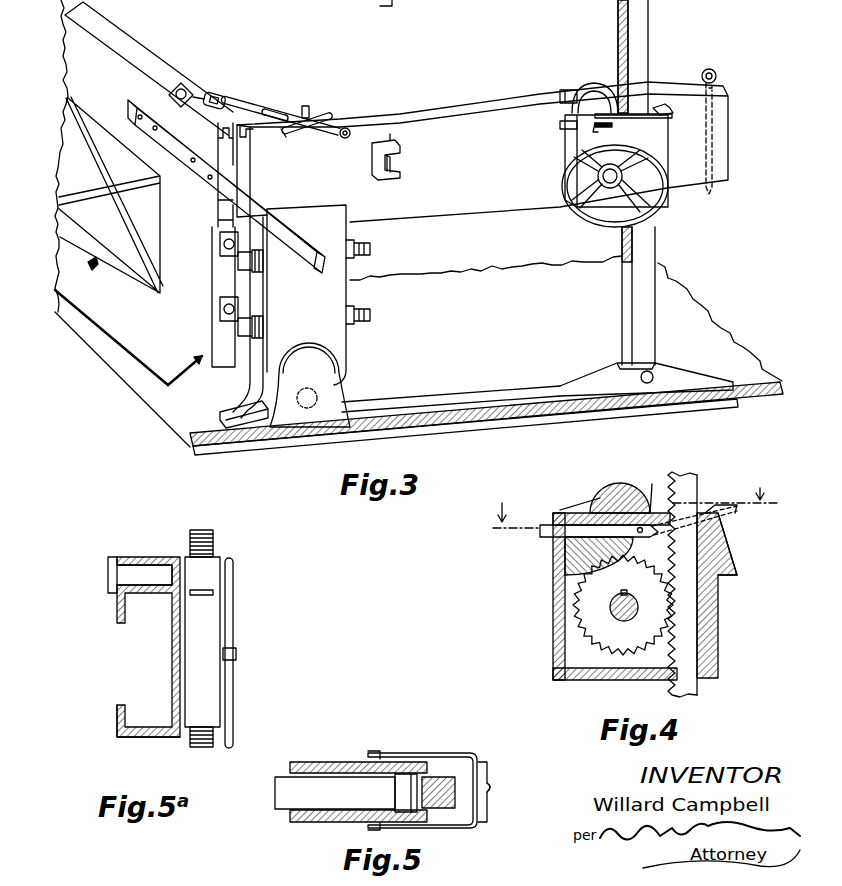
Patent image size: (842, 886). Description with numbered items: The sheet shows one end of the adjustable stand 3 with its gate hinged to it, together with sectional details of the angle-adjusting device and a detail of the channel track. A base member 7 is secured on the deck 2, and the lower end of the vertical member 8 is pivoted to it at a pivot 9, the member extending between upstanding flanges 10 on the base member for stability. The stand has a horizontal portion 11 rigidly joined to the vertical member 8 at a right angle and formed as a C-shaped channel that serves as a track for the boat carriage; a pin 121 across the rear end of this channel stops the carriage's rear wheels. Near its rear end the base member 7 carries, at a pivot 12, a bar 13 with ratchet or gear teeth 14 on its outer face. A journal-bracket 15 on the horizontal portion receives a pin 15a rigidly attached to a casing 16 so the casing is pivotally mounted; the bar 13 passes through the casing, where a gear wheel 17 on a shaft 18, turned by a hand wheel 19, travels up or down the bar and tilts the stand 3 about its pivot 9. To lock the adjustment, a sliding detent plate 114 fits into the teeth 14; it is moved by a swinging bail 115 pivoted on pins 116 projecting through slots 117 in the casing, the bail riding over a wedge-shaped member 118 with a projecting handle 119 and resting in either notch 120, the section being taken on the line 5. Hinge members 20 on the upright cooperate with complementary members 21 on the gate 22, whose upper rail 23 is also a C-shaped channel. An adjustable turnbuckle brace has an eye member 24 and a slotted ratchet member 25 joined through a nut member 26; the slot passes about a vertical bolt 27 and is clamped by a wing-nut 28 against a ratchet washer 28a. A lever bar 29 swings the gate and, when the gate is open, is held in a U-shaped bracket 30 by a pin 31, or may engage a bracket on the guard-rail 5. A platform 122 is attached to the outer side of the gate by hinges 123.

In FIG. 3, the deck 2 is at (552, 417).
In FIG. 3, the stand 3 is at (371, 279).
In FIG. 4, the guard-rail 5 is at (625, 513).
In FIG. 3, the base member 7 is at (475, 399).
In FIG. 3, the vertical member 8 is at (332, 341).
In FIG. 3, the pivot 9 is at (317, 396).
In FIG. 3, the upstanding flanges 10 is at (327, 364).
In FIG. 3, the horizontal portion 11 is at (483, 193).
In FIG. 5A, the horizontal portion 11 is at (115, 735).
In FIG. 3, the pivot 12 is at (655, 372).
In FIG. 3, the bar 13 is at (640, 275).
In FIG. 5A, the bar 13 is at (213, 547).
In FIG. 5, the bar 13 is at (443, 778).
In FIG. 4, the bar 13 is at (688, 491).
In FIG. 3, the ratchet or gear teeth 14 is at (618, 43).
In FIG. 5, the ratchet or gear teeth 14 is at (417, 790).
In FIG. 4, the ratchet or gear teeth 14 is at (672, 688).
In FIG. 3, the journal-bracket 15 is at (577, 90).
In FIG. 5A, the journal-bracket 15 is at (139, 556).
In FIG. 4, the journal-bracket 15 is at (585, 512).
In FIG. 5A, the pin 15a is at (133, 577).
In FIG. 4, the pin 15a is at (578, 490).
In FIG. 3, the casing 16 is at (575, 149).
In FIG. 5A, the casing 16 is at (205, 690).
In FIG. 5, the casing 16 is at (320, 823).
In FIG. 4, the casing 16 is at (553, 576).
In FIG. 4, the ratchet or gear wheel 17 is at (592, 605).
In FIG. 3, the shaft 18 is at (604, 177).
In FIG. 4, the shaft 18 is at (612, 612).
In FIG. 3, the hand wheel 19 is at (583, 203).
In FIG. 5A, the hand wheel 19 is at (236, 653).
In FIG. 3, the hinge members 20 is at (237, 261).
In FIG. 3, the complementary members 21 is at (219, 245).
In FIG. 3, the gate 22 is at (110, 195).
In FIG. 3, the upper rail 23 is at (128, 51).
In FIG. 3, the eye member 24 is at (196, 96).
In FIG. 3, the slotted ratchet member 25 is at (260, 104).
In FIG. 3, the nut member 26 is at (226, 98).
In FIG. 3, the vertical bolt 27 is at (308, 107).
In FIG. 3, the wing-nut 28 is at (324, 113).
In FIG. 3, the ratchet washer 28a is at (286, 137).
In FIG. 3, the lever bar 29 is at (258, 206).
In FIG. 3, the U-shaped bracket 30 is at (400, 147).
In FIG. 3, the pin 31 is at (400, 161).
In FIG. 3, the sliding detent plate 114 is at (560, 126).
In FIG. 5A, the sliding detent plate 114 is at (214, 592).
In FIG. 5, the sliding detent plate 114 is at (335, 793).
In FIG. 4, the sliding detent plate 114 is at (556, 532).
In FIG. 3, the swinging bail 115 is at (668, 117).
In FIG. 5, the swinging bail 115 is at (410, 753).
In FIG. 5, the pins 116 is at (391, 782).
In FIG. 4, the pins 116 is at (660, 490).
In FIG. 3, the slots 117 is at (608, 134).
In FIG. 5, the wedge-shaped member 118 is at (484, 766).
In FIG. 4, the wedge-shaped member 118 is at (730, 555).
In FIG. 3, the projecting handle 119 is at (672, 110).
In FIG. 5, the projecting handle 119 is at (492, 788).
In FIG. 4, the projecting handle 119 is at (733, 503).
In FIG. 4, the notch 120 is at (736, 576).
In FIG. 3, the pin 121 is at (716, 84).
In FIG. 3, the platform 122 is at (123, 322).
In FIG. 3, the hinges 123 is at (95, 270).